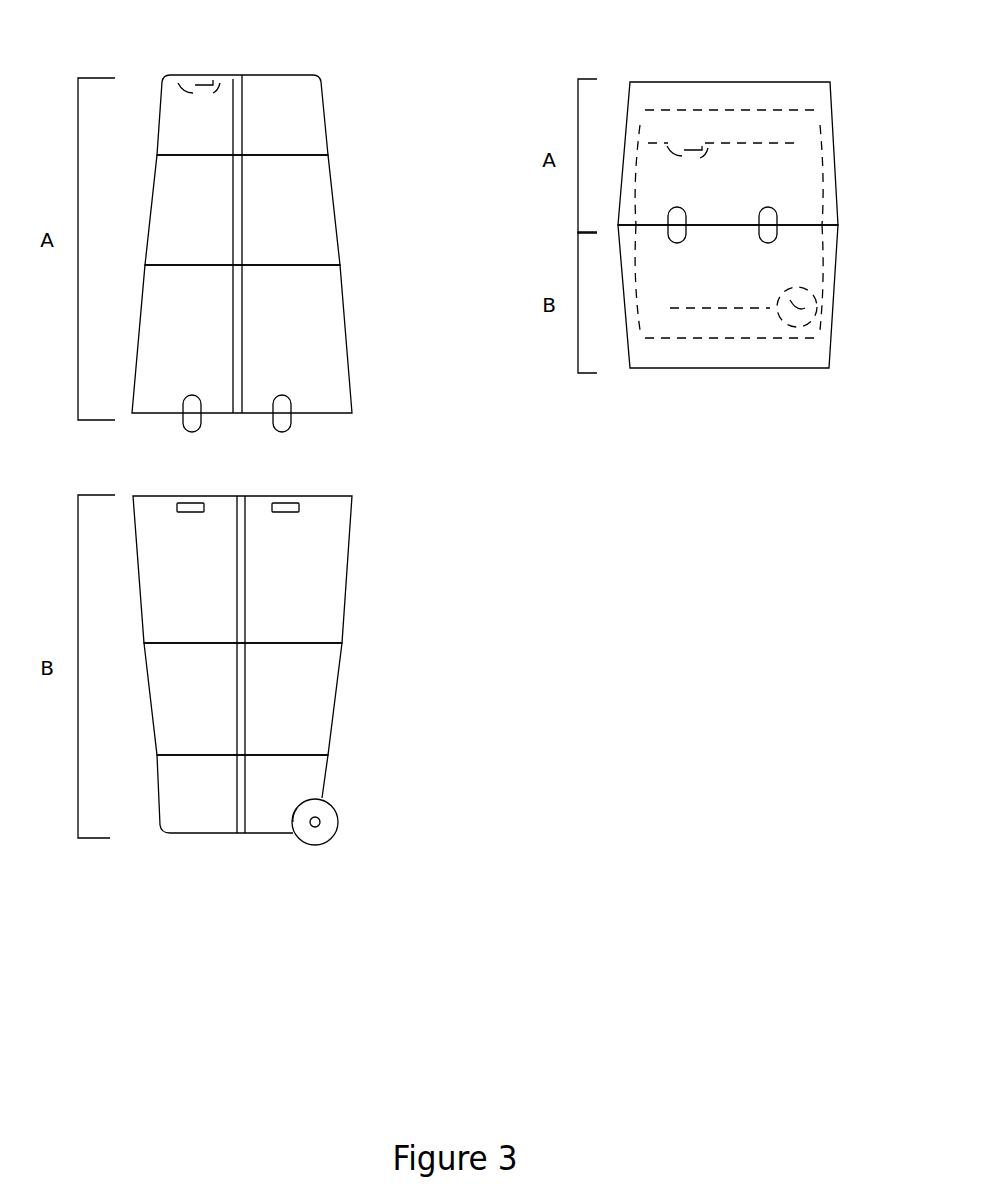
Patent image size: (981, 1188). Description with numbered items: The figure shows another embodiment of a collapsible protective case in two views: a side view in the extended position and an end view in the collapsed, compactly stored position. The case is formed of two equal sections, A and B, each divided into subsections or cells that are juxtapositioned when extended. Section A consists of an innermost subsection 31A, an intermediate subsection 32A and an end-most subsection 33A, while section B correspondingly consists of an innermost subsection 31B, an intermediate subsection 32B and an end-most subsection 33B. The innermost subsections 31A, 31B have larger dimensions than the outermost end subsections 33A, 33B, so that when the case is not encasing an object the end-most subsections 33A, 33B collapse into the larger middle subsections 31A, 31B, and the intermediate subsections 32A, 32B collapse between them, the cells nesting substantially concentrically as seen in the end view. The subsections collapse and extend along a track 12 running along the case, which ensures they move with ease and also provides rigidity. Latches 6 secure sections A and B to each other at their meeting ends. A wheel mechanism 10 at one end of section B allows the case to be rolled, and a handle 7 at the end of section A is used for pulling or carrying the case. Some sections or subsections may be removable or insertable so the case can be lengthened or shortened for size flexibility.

The handle 7 is at (198, 70).
The track 12 is at (248, 105).
The end-most subsection of section A 33A is at (330, 120).
The intermediate subsection of section A 32A is at (342, 217).
The innermost subsection of section A 31A is at (357, 342).
The latches 6 is at (280, 440).
The innermost subsection of section B 31B is at (362, 566).
The intermediate subsection of section B 32B is at (352, 699).
The end-most subsection of section B 33B is at (696, 313).
The wheel mechanism 10 is at (348, 827).